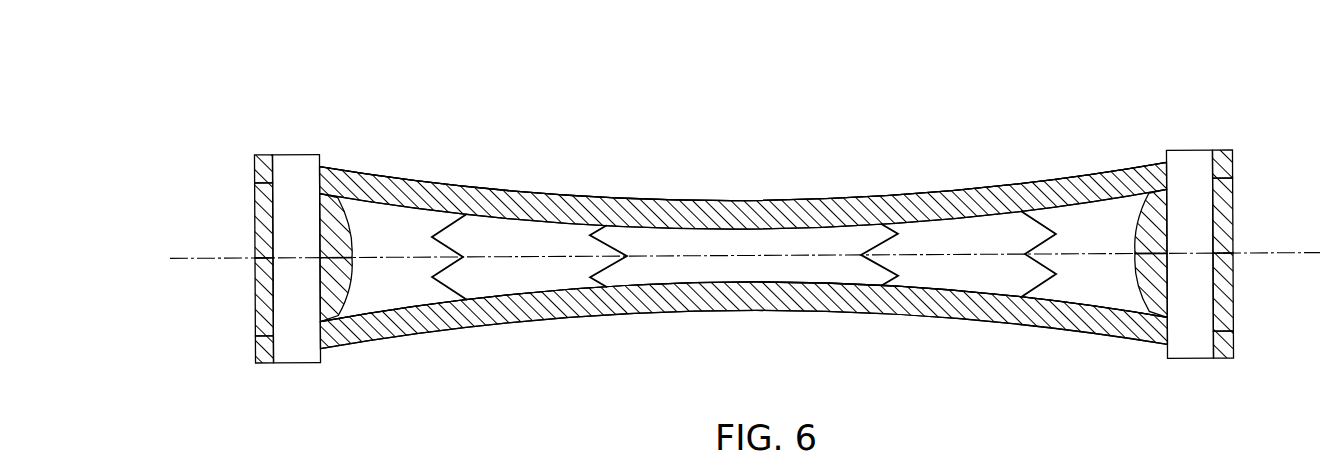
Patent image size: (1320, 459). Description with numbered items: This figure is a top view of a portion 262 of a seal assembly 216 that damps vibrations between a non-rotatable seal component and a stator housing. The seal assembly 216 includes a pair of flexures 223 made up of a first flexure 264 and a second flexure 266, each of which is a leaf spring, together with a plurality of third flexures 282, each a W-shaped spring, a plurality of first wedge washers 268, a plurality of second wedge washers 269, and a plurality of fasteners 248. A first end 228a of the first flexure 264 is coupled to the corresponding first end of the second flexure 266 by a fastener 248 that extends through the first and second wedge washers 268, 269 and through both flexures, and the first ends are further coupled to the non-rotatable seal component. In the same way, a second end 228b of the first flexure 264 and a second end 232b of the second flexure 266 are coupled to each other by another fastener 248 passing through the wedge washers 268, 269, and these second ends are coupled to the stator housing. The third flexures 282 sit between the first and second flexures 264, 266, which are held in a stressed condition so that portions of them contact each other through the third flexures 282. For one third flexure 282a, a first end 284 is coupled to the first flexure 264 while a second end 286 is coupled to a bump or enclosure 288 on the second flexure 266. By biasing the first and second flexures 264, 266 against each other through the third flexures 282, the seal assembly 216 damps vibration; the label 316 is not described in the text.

The seal assembly 216 is at (1186, 72).
The pair of flexures 223 is at (568, 289).
The first end of the first flexure 228a is at (1234, 154).
The second end of the first flexure 228b is at (262, 180).
The second end of the second flexure 232b is at (257, 352).
The fasteners 248 is at (303, 361).
The portion of the seal assembly 262 is at (350, 161).
The first flexure 264 is at (855, 196).
The second flexure 266 is at (416, 340).
The first wedge washers 268 is at (347, 220).
The second wedge washers 269 is at (347, 291).
The third flexures 282 is at (880, 243).
The third flexure 282a is at (462, 242).
The first end of the third flexure 284 is at (478, 218).
The second end of the third flexure 286 is at (464, 325).
The bump or enclosure 288 is at (467, 300).
The housing 316 is at (1227, 458).